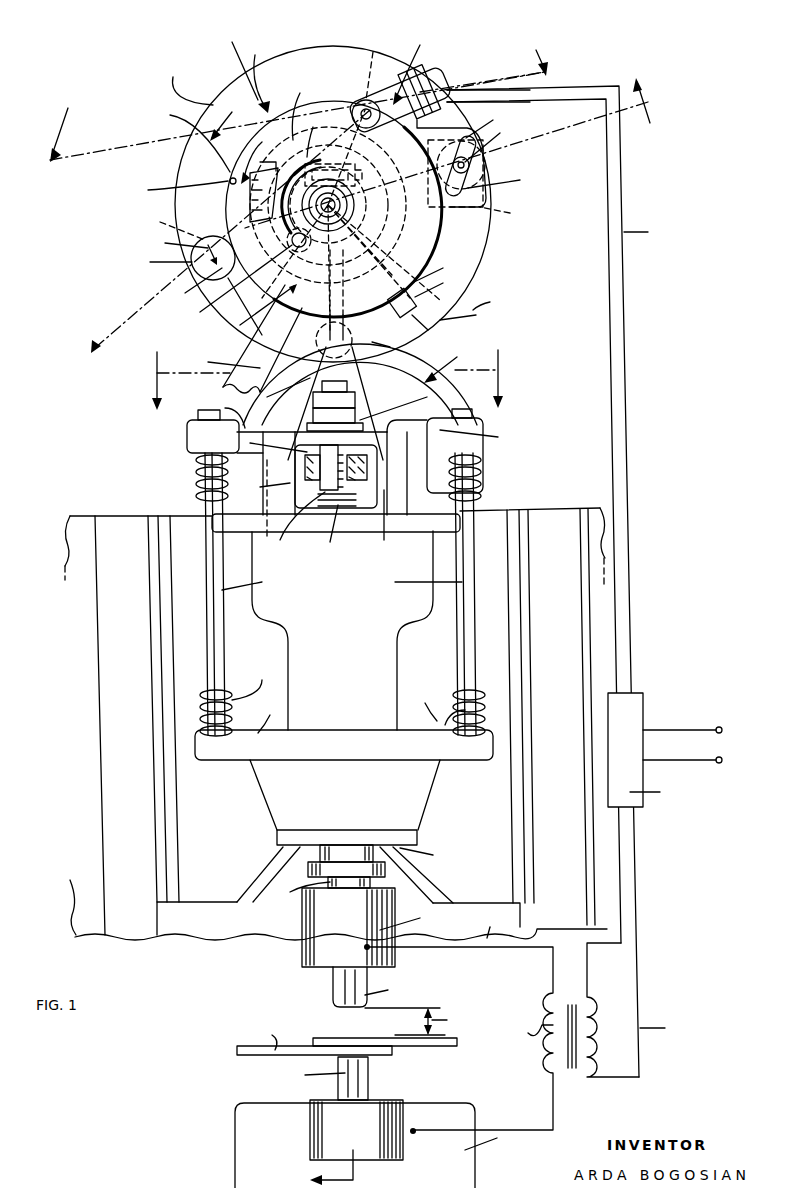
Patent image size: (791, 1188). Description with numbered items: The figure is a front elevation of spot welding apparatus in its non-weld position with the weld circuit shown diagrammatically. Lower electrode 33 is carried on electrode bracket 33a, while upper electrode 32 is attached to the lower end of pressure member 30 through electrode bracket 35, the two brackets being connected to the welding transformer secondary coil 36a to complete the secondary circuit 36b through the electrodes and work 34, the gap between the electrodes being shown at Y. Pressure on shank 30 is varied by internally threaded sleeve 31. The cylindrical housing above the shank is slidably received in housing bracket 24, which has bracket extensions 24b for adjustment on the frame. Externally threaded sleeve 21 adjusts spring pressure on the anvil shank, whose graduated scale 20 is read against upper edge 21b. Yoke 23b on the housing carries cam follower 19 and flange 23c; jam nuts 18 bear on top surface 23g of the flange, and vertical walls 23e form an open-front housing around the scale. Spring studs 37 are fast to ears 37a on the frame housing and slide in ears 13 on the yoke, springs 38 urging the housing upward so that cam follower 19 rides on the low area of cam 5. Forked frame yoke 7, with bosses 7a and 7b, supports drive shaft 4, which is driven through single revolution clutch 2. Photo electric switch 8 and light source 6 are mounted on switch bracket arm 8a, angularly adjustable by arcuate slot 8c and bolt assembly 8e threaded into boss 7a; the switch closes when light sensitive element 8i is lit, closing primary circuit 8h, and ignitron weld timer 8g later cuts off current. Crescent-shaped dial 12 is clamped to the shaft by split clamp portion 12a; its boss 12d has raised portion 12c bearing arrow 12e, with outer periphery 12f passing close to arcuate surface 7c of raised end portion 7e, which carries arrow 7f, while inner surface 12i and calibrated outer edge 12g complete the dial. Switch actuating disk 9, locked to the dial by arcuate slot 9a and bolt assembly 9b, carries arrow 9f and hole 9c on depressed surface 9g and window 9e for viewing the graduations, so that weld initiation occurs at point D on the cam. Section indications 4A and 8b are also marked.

The single revolution clutch 2 is at (449, 633).
The drive shaft 4 is at (299, 95).
The section line 4A- 4A is at (267, 246).
The cam 5 is at (333, 186).
The light source 6 is at (400, 88).
The forked frame yoke 7 is at (227, 365).
The boss 7a is at (474, 171).
The boss 7b is at (170, 224).
The arcuate radial surface 7c is at (176, 239).
The raised end portion 7e is at (182, 258).
The arrow 7f is at (213, 301).
The photo electric switch 8 is at (482, 87).
The switch bracket arm 8a is at (489, 125).
The lead wire 8b is at (557, 581).
The arcuate slot 8c is at (502, 183).
The threaded bolt and washer assembly 8e is at (476, 162).
The ignitron weld timer 8g is at (665, 750).
The primary circuit 8h is at (636, 1010).
The light sensitive element 8i is at (366, 80).
The switch actuating disk 9 is at (333, 202).
The arcuate slot 9a is at (243, 274).
The threaded bolt and washer assembly 9b is at (256, 309).
The hole 9c is at (177, 187).
The window 9e is at (315, 188).
The arrow 9f is at (259, 174).
The depressed surface 9g is at (185, 142).
The dial member 12 is at (322, 330).
The split clamp portion 12a is at (330, 220).
The raised portion 12c is at (443, 284).
The radially extending boss 12d is at (384, 252).
The arrow 12e is at (472, 313).
The outer periphery 12f is at (419, 312).
The raised arcuate outer edge 12g is at (395, 347).
The inner surface 12i is at (439, 270).
The ears 13 is at (216, 425).
The jam nuts 18 is at (360, 384).
The cam follower 19 is at (278, 398).
The graduated scale 20 is at (337, 524).
The externally threaded sleeve 21 is at (317, 499).
The upper edge 21b is at (298, 471).
The yoke 23b is at (335, 391).
The flange 23c is at (335, 412).
The vertical walls 23e is at (336, 492).
The top surface 23g is at (457, 451).
The housing bracket 24 is at (352, 666).
The bracket extensions 24b is at (232, 831).
The pressure member 30 is at (345, 878).
The internally threaded sleeve 31 is at (365, 859).
The upper electrode 32 is at (370, 987).
The lower electrode 33 is at (325, 1078).
The electrode bracket 33a is at (379, 1144).
The work 34 is at (347, 1040).
The electrode bracket 35 is at (370, 927).
The welding transformer secondary coil 36a is at (470, 1039).
The secondary circuit 36b is at (485, 926).
The spring studs 37 is at (340, 594).
The ears 37a is at (344, 711).
The springs 38 is at (340, 598).
The point D is at (239, 64).
The gap dimension Y is at (412, 1021).